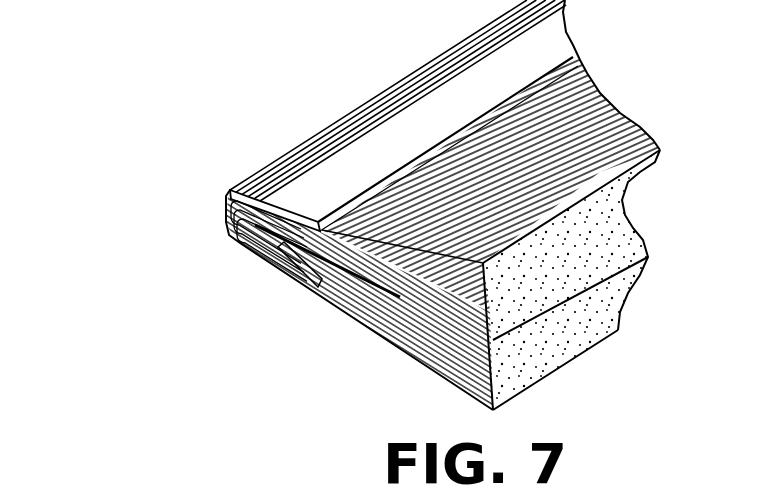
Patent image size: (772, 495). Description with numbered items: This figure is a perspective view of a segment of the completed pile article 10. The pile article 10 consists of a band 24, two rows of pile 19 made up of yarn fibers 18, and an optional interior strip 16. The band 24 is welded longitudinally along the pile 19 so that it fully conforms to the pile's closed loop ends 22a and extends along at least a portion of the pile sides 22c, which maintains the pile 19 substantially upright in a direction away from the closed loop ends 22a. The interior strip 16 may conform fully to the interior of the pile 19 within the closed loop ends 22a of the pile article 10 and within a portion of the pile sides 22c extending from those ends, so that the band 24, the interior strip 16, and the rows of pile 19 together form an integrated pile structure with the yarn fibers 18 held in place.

The pile article 10 is at (395, 84).
The band 24 is at (282, 166).
The yarn fibers 18 is at (583, 110).
The pile sides 22c is at (430, 243).
The interior strip 16 is at (266, 262).
The pile 19 is at (550, 290).
The closed loop ends 22a is at (222, 217).